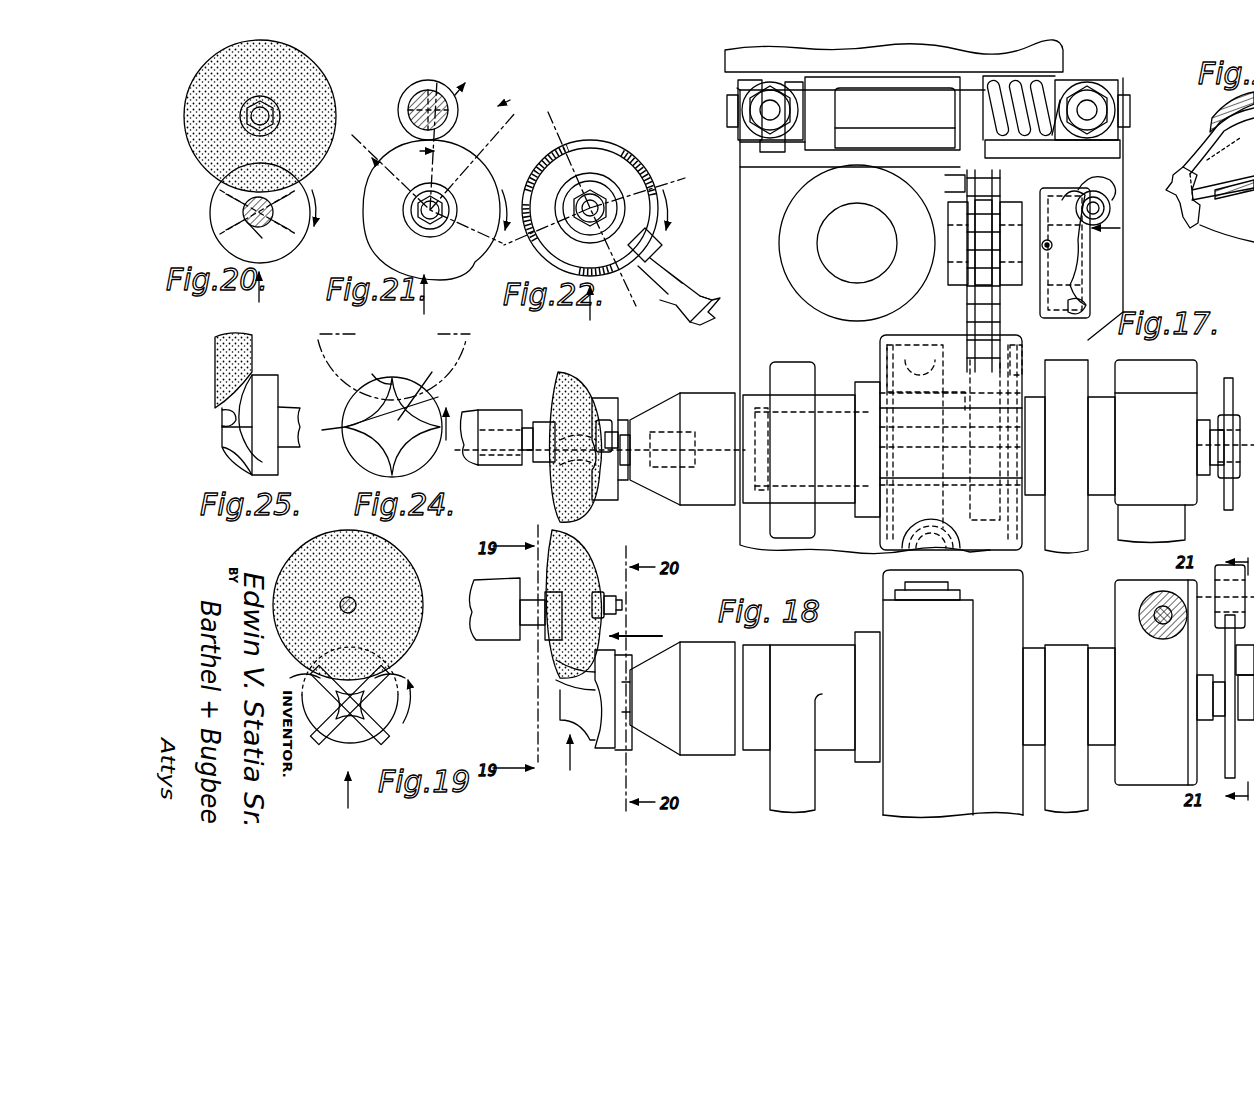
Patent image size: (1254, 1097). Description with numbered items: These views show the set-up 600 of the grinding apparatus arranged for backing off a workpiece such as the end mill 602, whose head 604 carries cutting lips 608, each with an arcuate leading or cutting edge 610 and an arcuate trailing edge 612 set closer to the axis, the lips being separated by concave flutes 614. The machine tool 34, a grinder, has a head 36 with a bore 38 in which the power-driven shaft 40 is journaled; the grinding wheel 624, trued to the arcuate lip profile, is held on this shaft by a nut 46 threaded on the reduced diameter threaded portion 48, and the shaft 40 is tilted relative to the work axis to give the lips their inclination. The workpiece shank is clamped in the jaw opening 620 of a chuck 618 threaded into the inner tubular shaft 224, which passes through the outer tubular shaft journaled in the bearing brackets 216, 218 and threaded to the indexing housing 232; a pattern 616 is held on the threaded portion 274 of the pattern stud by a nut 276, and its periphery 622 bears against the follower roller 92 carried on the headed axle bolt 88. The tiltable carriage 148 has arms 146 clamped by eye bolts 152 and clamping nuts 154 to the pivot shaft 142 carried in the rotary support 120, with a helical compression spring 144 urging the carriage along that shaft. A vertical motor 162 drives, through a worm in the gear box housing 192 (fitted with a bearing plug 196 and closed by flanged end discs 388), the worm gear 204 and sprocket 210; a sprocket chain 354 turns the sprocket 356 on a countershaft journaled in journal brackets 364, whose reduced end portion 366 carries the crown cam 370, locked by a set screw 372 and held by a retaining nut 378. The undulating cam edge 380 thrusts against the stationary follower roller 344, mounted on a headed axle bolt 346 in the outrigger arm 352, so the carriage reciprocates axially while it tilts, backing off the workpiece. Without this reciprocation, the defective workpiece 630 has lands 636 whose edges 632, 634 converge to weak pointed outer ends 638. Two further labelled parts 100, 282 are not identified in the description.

In FIG. 17, the machine tool 34 is at (478, 470).
In FIG. 18, the machine tool 34 is at (478, 638).
In FIG. 17, the head 36 is at (504, 466).
In FIG. 18, the head 36 is at (504, 632).
In FIG. 17, the bore 38 is at (510, 420).
In FIG. 17, the rotary power-driven shaft 40 is at (472, 418).
In FIG. 20, the nut 46 is at (280, 110).
In FIG. 17, the nut 46 is at (602, 420).
In FIG. 18, the nut 46 is at (600, 592).
In FIG. 20, the reduced diameter threaded portion 48 is at (270, 119).
In FIG. 17, the reduced diameter threaded portion 48 is at (616, 430).
In FIG. 18, the reduced diameter threaded portion 48 is at (612, 595).
In FIG. 19, the reduced diameter threaded portion 48 is at (357, 607).
In FIG. 21, the headed axle bolt 88 is at (437, 108).
In FIG. 17, the headed axle bolt 88 is at (1232, 478).
In FIG. 18, the headed axle bolt 88 is at (1216, 588).
In FIG. 21, the pattern or cam follower roller 92 is at (420, 82).
In FIG. 17, the pattern or cam follower roller 92 is at (1222, 470).
In FIG. 18, the pattern or cam follower roller 92 is at (1238, 568).
In FIG. 17, the bar 100 is at (894, 90).
In FIG. 17, the rotary support 120 is at (905, 82).
In FIG. 17, the pivot shaft 142 is at (728, 98).
In FIG. 17, the helical compression spring 144 is at (1060, 80).
In FIG. 17, the bifurcated bosses or arms 146 is at (748, 82).
In FIG. 17, the tiltable carriage 148 is at (745, 228).
In FIG. 17, the eye bolts 152 is at (770, 108).
In FIG. 17, the clamping nuts 154 is at (755, 118).
In FIG. 17, the vertical motor 162 is at (800, 276).
In FIG. 17, the gear box housing 192 is at (930, 326).
In FIG. 18, the gear box housing 192 is at (1008, 600).
In FIG. 17, the threaded bearing plug 196 is at (915, 545).
In FIG. 18, the threaded bearing plug 196 is at (920, 580).
In FIG. 17, the worm gear 204 is at (932, 372).
In FIG. 17, the sprocket 210 is at (1008, 552).
In FIG. 17, the bearing bracket 216 is at (1048, 395).
In FIG. 18, the bearing bracket 216 is at (1062, 650).
In FIG. 17, the bearing bracket 218 is at (836, 396).
In FIG. 18, the bearing bracket 218 is at (830, 650).
In FIG. 17, the inner tubular shaft 224 is at (760, 400).
In FIG. 18, the inner tubular shaft 224 is at (1204, 675).
In FIG. 17, the indexing housing 232 is at (1145, 360).
In FIG. 18, the indexing housing 232 is at (1122, 592).
In FIG. 21, the reduced diameter partially threaded portion 274 is at (410, 222).
In FIG. 18, the reduced diameter partially threaded portion 274 is at (1245, 660).
In FIG. 21, the nut 276 is at (430, 226).
In FIG. 18, the nut 276 is at (1244, 722).
In FIG. 18, the shaft 282 is at (1162, 591).
In FIG. 22, the cam or pattern follower 344 is at (648, 243).
In FIG. 17, the cam or pattern follower 344 is at (1112, 201).
In FIG. 22, the headed axle bolt 346 is at (618, 245).
In FIG. 17, the headed axle bolt 346 is at (1104, 213).
In FIG. 17, the offset arm or outrigger 352 is at (1100, 150).
In FIG. 17, the sprocket chain 354 is at (952, 186).
In FIG. 17, the sprocket 356 is at (978, 240).
In FIG. 17, the journal bracket 364 is at (955, 285).
In FIG. 22, the outer end portion of countershaft 366 is at (598, 198).
In FIG. 17, the outer end portion of countershaft 366 is at (1084, 238).
In FIG. 22, the crown cam 370 is at (592, 142).
In FIG. 17, the crown cam 370 is at (1058, 186).
In FIG. 17, the set screw 372 is at (1045, 252).
In FIG. 22, the retaining nut 378 is at (600, 200).
In FIG. 22, the cam surface or edge 380 is at (628, 158).
In FIG. 17, the cam surface or edge 380 is at (1082, 296).
In FIG. 17, the flanged end plates or discs 388 is at (958, 334).
In FIG. 17, the set-up 600 is at (1130, 80).
In FIG. 20, the end mill 602 is at (204, 170).
In FIG. 17, the end mill 602 is at (626, 495).
In FIG. 18, the end mill 602 is at (608, 762).
In FIG. 19, the end mill 602 is at (396, 736).
In FIG. 17, the head 604 is at (606, 490).
In FIG. 18, the head 604 is at (622, 664).
In FIG. 19, the head 604 is at (318, 748).
In FIG. 23, the cutting lips 608 is at (1205, 142).
In FIG. 18, the cutting lips 608 is at (562, 686).
In FIG. 19, the cutting lips 608 is at (375, 745).
In FIG. 20, the leading or cutting edge 610 is at (256, 212).
In FIG. 23, the leading or cutting edge 610 is at (1195, 160).
In FIG. 18, the leading or cutting edge 610 is at (560, 674).
In FIG. 19, the leading or cutting edge 610 is at (362, 714).
In FIG. 20, the trailing edge 612 is at (247, 236).
In FIG. 23, the trailing edge 612 is at (1205, 152).
In FIG. 18, the trailing edge 612 is at (578, 715).
In FIG. 19, the trailing edge 612 is at (360, 726).
In FIG. 23, the concave flutes or recesses 614 is at (1183, 182).
In FIG. 21, the pattern 616 is at (472, 178).
In FIG. 22, the pattern 616 is at (518, 163).
In FIG. 17, the pattern 616 is at (1235, 395).
In FIG. 18, the pattern 616 is at (1226, 748).
In FIG. 17, the chuck 618 is at (704, 392).
In FIG. 18, the chuck 618 is at (693, 640).
In FIG. 17, the socket or jaw opening 620 is at (656, 432).
In FIG. 21, the periphery 622 is at (453, 266).
In FIG. 17, the periphery 622 is at (1237, 500).
In FIG. 18, the periphery 622 is at (1232, 772).
In FIG. 20, the grinding wheel 624 is at (320, 78).
In FIG. 17, the grinding wheel 624 is at (578, 372).
In FIG. 18, the grinding wheel 624 is at (585, 545).
In FIG. 19, the grinding wheel 624 is at (410, 574).
In FIG. 24, the grinding wheel 624 is at (466, 358).
In FIG. 25, the grinding wheel 624 is at (215, 355).
In FIG. 24, the workpiece 630 is at (356, 468).
In FIG. 25, the workpiece 630 is at (280, 371).
In FIG. 24, the edge 632 is at (370, 371).
In FIG. 25, the edge 632 is at (222, 418).
In FIG. 24, the edge 634 is at (426, 387).
In FIG. 25, the edge 634 is at (222, 444).
In FIG. 24, the lands or lips 636 is at (388, 421).
In FIG. 25, the lands or lips 636 is at (236, 428).
In FIG. 24, the outer ends 638 is at (393, 378).
In FIG. 25, the outer ends 638 is at (268, 402).